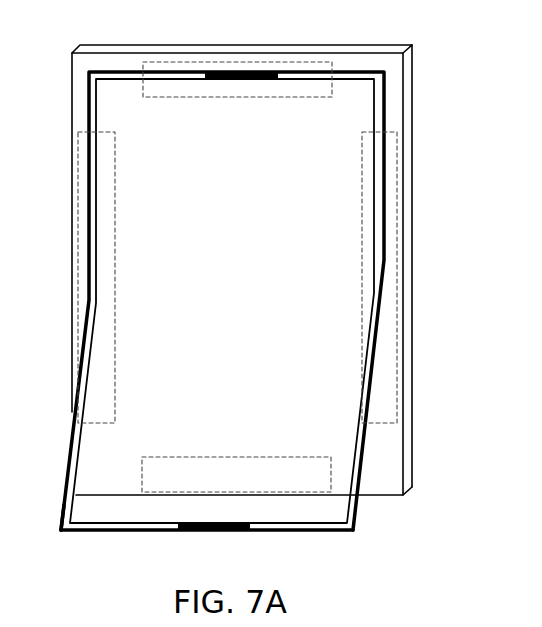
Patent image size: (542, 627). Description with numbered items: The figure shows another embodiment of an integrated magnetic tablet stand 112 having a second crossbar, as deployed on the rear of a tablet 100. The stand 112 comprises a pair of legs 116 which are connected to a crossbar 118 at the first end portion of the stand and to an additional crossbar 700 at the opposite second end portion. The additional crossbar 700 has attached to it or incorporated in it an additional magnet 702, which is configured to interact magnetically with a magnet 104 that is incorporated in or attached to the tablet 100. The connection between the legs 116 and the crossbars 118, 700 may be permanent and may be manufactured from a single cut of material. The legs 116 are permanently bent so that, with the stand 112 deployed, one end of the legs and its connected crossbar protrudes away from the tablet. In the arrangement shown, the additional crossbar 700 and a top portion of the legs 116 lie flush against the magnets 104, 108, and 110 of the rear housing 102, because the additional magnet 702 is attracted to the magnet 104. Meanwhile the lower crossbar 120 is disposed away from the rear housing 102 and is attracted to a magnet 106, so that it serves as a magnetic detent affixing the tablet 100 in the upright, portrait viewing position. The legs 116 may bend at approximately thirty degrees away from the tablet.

The tablet 100 is at (408, 516).
The rear housing 102 is at (405, 72).
The magnet 104 is at (207, 62).
The magnet 106 is at (142, 475).
The magnet 108 is at (72, 210).
The magnet 110 is at (395, 200).
The stand 112 is at (331, 553).
The legs 116 is at (78, 378).
The crossbar 118 is at (105, 532).
The lower crossbar 120 is at (218, 531).
The additional crossbar 700 is at (110, 72).
The additional magnet 702 is at (282, 75).